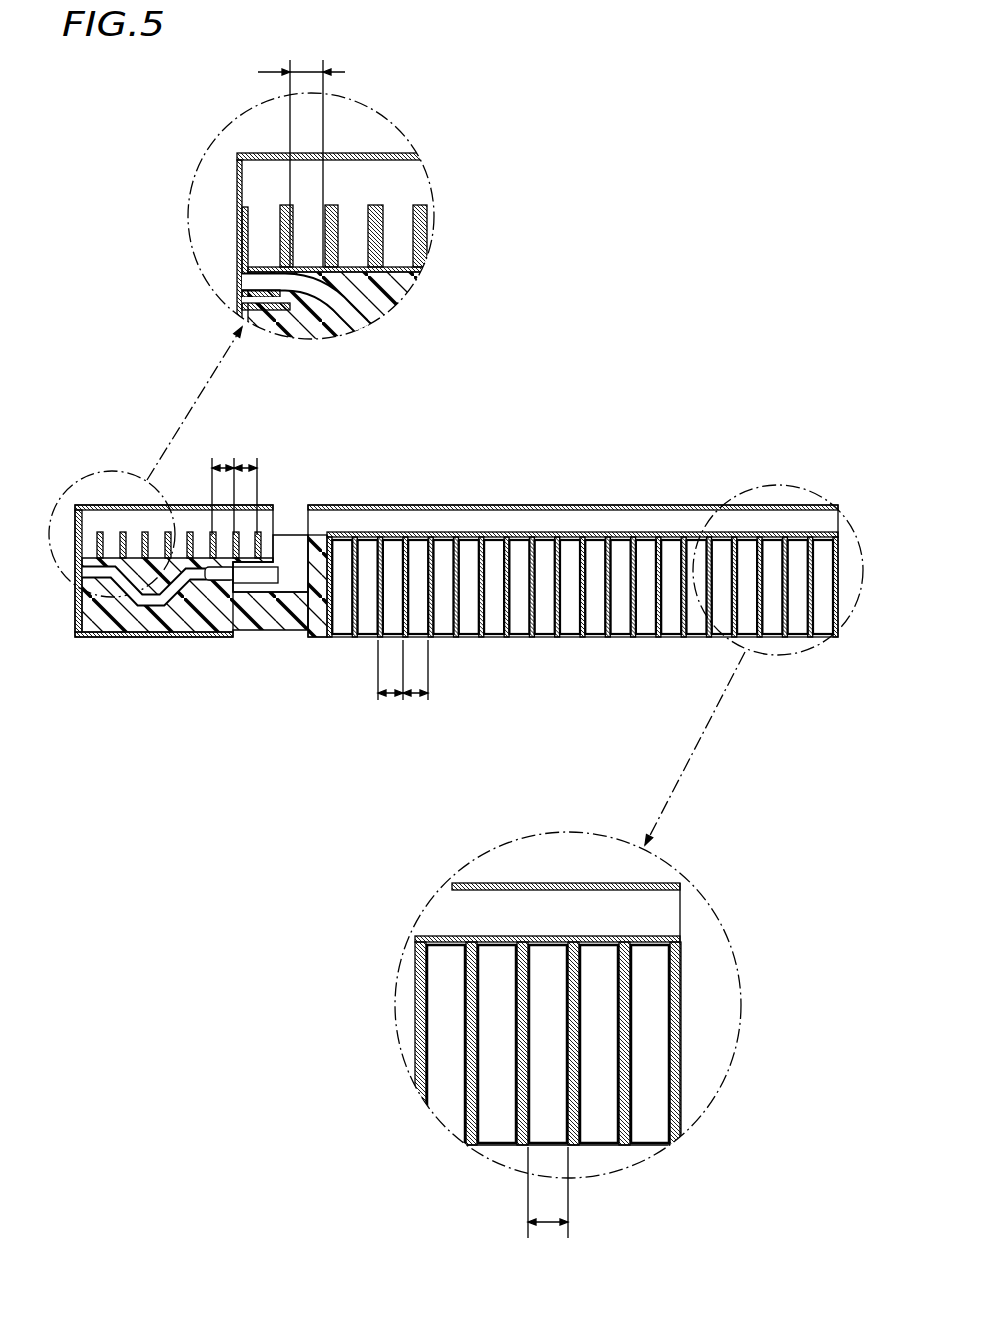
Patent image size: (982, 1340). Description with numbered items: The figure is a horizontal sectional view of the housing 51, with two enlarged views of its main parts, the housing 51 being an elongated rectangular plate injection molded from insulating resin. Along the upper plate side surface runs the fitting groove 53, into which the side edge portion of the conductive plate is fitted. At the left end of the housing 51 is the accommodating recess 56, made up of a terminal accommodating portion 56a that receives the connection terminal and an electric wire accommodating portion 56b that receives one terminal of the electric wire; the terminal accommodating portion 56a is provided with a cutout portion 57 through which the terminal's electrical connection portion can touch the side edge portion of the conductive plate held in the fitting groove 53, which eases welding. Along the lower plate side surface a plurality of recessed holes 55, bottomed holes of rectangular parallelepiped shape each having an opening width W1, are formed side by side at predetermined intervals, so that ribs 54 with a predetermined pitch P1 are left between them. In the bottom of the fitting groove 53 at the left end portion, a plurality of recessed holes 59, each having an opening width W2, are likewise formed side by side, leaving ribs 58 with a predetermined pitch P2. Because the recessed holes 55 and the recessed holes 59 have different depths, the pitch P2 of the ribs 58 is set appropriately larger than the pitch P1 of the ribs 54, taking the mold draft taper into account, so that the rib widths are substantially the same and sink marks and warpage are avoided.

The housing 51 is at (583, 507).
The fitting groove 53 is at (180, 517).
The rib 54 is at (545, 600).
The recessed hole 55 is at (793, 600).
The accommodating recess 56 is at (265, 519).
The terminal accommodating portion 56a is at (272, 600).
The electric wire accommodating portion 56b is at (166, 606).
The cutout portion 57 is at (293, 557).
The rib 58 is at (142, 547).
The recessed hole 59 is at (112, 557).
The predetermined pitch P1 is at (416, 700).
The predetermined pitch P2 is at (243, 466).
The opening width W1 is at (548, 1205).
The opening width W2 is at (301, 151).